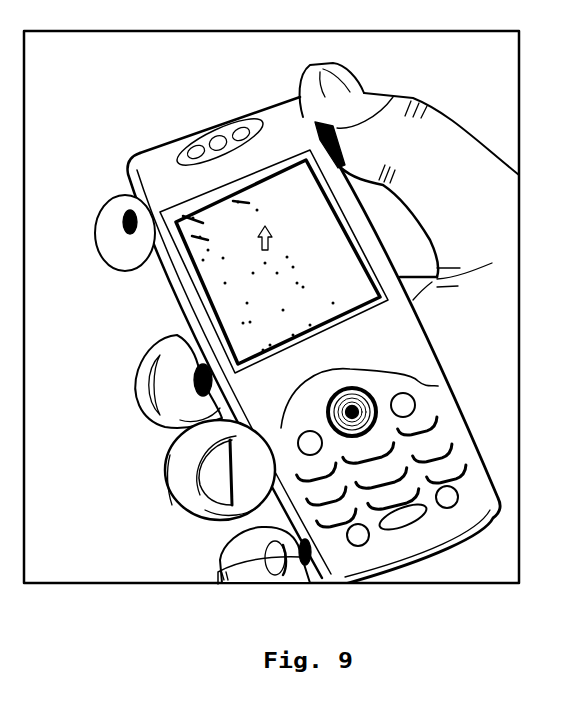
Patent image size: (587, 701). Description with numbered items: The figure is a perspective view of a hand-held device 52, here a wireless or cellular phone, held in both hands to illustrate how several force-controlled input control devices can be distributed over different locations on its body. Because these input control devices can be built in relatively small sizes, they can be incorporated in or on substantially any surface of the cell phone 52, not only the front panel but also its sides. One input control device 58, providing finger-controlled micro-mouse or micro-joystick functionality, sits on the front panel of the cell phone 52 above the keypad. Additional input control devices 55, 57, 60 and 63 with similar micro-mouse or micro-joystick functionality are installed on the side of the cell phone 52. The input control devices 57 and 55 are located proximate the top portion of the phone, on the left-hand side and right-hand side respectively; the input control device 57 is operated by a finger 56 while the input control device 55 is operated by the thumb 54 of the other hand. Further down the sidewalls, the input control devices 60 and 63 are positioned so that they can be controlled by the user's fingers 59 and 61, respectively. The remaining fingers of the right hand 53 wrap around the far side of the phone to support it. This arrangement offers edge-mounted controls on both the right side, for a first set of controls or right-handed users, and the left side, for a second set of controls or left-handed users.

The hand-held device 52 is at (190, 135).
The fingers of right hand 53 is at (467, 307).
The thumb 54 is at (306, 80).
The input control device 55 is at (390, 97).
The finger 56 is at (120, 245).
The input control device 57 is at (128, 215).
The input control device 58 is at (372, 393).
The finger 59 is at (175, 360).
The input control device 60 is at (200, 395).
The finger 61 is at (233, 550).
The input control device 63 is at (218, 573).